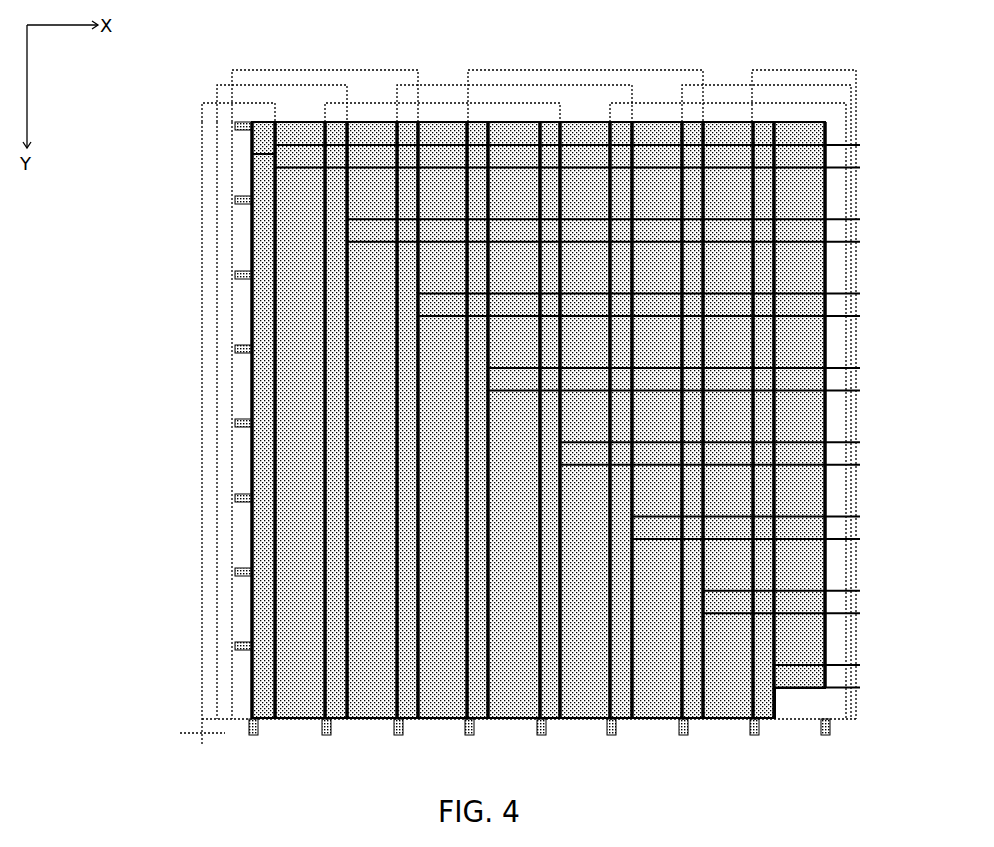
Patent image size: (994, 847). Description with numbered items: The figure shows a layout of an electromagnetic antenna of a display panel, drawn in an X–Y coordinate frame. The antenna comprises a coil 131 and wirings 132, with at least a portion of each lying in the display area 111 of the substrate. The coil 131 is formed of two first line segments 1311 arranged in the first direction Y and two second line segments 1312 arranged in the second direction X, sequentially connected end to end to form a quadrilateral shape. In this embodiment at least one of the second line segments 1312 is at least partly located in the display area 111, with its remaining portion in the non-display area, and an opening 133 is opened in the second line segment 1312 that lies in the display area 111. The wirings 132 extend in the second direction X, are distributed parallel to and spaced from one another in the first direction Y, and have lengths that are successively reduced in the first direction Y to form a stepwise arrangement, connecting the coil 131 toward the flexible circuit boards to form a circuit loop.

The display area 111 is at (293, 548).
The coil 131 is at (470, 397).
The first line segments 1311 is at (213, 103).
The second line segments 1312 is at (273, 262).
The wirings 132 is at (838, 165).
The opening 133 is at (253, 154).